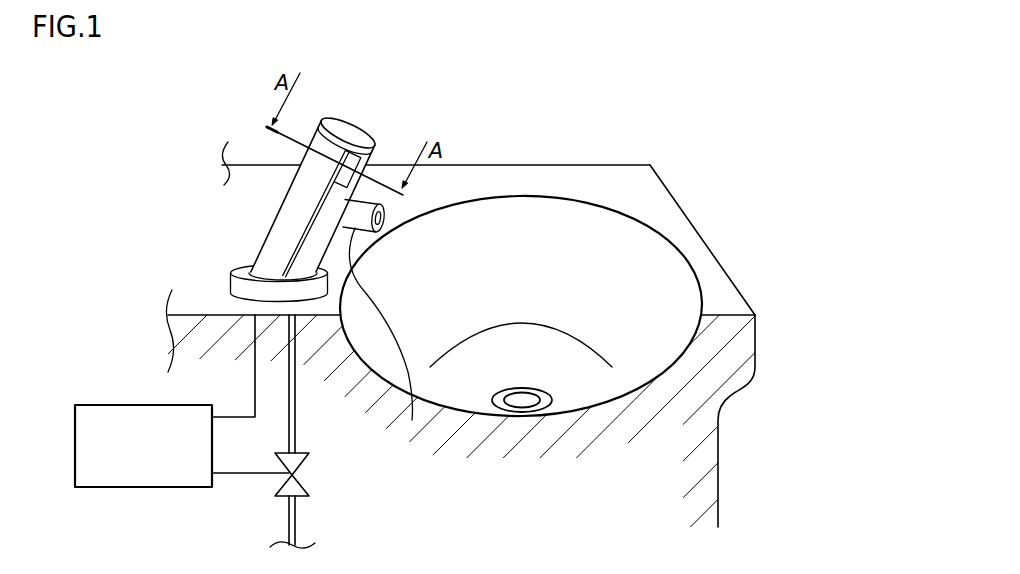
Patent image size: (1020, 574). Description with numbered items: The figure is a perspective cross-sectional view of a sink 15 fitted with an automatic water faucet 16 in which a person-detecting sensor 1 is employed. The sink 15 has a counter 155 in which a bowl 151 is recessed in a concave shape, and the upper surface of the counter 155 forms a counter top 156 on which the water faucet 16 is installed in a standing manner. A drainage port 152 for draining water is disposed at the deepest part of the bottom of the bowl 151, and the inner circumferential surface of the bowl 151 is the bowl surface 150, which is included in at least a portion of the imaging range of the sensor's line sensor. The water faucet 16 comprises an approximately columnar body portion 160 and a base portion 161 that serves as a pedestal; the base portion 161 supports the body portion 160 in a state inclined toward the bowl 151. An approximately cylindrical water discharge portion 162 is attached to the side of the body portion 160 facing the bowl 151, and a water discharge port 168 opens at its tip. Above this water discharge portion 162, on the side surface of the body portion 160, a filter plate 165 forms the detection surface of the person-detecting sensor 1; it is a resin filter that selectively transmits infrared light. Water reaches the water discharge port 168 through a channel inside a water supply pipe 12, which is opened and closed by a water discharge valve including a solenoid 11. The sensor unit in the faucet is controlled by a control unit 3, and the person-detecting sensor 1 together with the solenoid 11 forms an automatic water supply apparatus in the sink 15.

The person-detecting sensor 1 is at (183, 128).
The control unit 3 is at (103, 477).
The solenoid 11 is at (297, 487).
The water supply pipe 12 is at (290, 512).
The sink 15 is at (595, 157).
The water faucet 16 is at (357, 123).
The bowl surface 150 is at (642, 312).
The bowl 151 is at (520, 222).
The drainage port 152 is at (522, 402).
The counter 155 is at (690, 207).
The counter top 156 is at (623, 187).
The body portion 160 is at (300, 203).
The base portion 161 is at (237, 279).
The water discharge portion 162 is at (412, 420).
The filter plate 165 is at (374, 170).
The water discharge port 168 is at (383, 220).